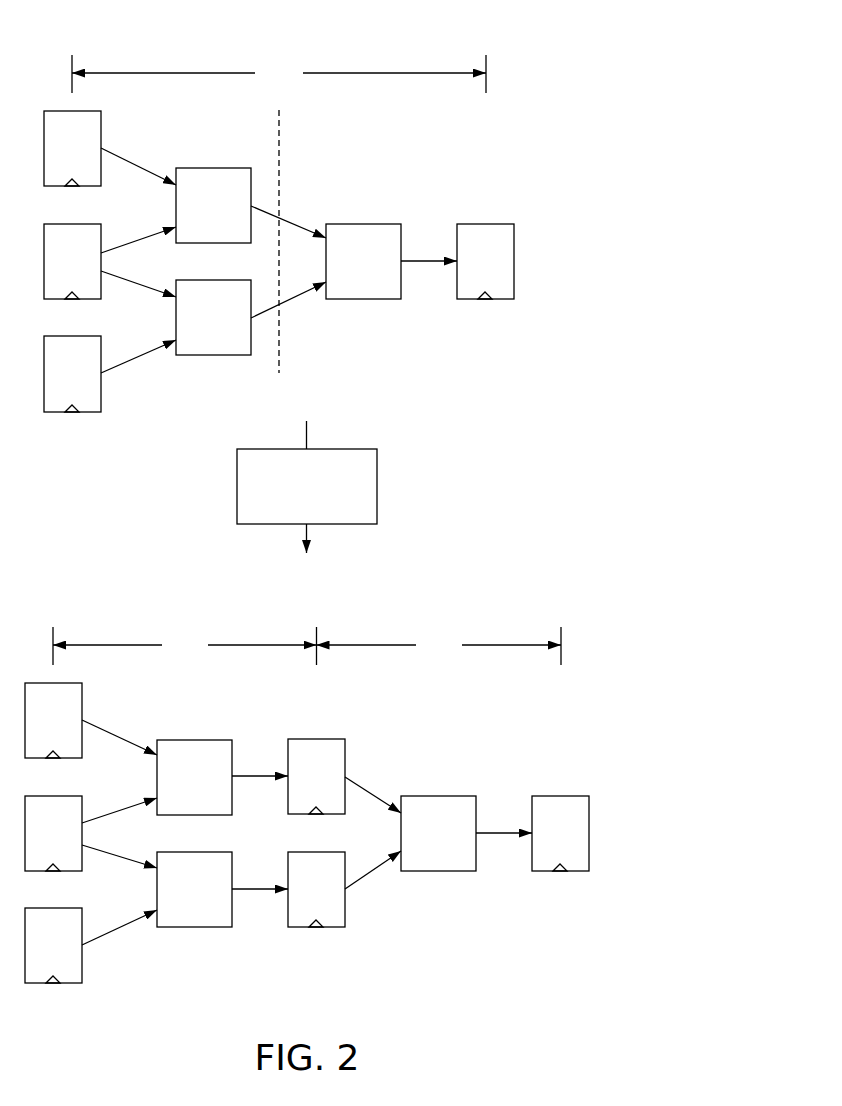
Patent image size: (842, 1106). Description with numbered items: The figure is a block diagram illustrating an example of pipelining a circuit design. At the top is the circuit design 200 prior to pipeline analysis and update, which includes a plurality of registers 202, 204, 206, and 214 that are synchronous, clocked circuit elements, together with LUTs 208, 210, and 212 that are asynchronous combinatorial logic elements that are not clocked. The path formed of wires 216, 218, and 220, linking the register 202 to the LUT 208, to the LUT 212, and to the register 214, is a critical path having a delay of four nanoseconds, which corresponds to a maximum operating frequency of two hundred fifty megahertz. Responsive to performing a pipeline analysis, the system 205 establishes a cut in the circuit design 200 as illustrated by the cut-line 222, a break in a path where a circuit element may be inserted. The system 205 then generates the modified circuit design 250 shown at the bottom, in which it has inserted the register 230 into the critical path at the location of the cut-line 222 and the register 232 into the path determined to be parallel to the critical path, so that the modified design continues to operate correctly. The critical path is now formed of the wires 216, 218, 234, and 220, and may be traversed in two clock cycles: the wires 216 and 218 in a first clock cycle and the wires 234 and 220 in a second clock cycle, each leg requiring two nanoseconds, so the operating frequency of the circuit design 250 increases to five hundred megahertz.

The circuit design 200 is at (289, 28).
The register 202 is at (55, 158).
The register 204 is at (55, 271).
The register 206 is at (55, 384).
The LUT 208 is at (196, 228).
The LUT 210 is at (196, 340).
The LUT 212 is at (346, 284).
The register 214 is at (468, 271).
The wire 216 is at (125, 157).
The wire 218 is at (297, 225).
The wire 220 is at (420, 260).
The cut-line 222 is at (279, 150).
The system 205 is at (289, 510).
The modified circuit design 250 is at (289, 608).
The register 230 is at (299, 786).
The register 232 is at (299, 899).
The wire 234 is at (363, 785).